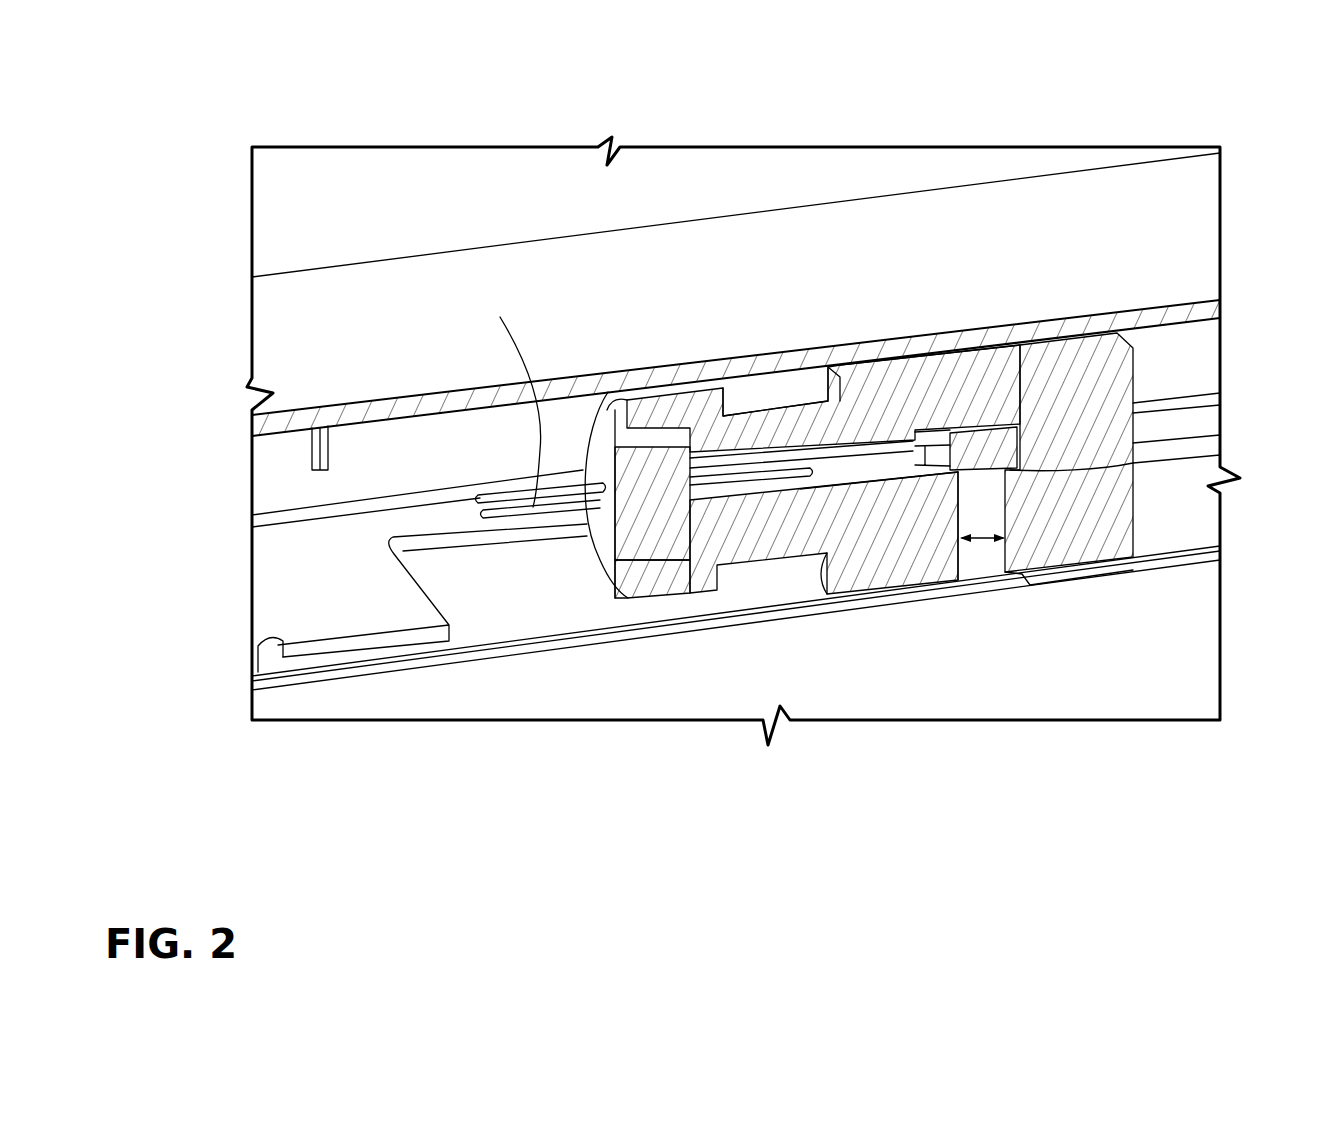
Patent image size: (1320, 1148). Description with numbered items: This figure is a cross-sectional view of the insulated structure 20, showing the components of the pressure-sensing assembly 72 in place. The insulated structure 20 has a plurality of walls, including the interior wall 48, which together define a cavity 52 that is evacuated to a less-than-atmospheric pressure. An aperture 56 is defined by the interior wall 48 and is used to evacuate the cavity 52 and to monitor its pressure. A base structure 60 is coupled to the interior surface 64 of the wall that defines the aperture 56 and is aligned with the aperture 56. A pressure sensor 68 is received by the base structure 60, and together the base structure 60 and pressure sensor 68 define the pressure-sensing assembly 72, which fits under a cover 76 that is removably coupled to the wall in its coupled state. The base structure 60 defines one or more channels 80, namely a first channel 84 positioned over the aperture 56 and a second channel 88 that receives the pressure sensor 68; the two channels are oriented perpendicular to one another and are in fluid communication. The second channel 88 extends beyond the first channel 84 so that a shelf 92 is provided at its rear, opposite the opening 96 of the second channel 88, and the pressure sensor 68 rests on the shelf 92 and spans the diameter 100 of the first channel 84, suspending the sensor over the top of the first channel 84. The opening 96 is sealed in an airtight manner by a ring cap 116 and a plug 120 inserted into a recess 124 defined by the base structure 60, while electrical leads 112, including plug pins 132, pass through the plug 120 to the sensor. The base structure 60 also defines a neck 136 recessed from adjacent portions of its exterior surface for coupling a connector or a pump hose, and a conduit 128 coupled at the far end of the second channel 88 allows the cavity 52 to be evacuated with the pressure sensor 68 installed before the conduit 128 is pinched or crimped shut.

The insulated structure 20 is at (1196, 104).
The interior wall 48 is at (1198, 520).
The cavity 52 is at (685, 688).
The aperture 56 is at (954, 514).
The base structure 60 is at (1142, 383).
The interior surface 64 is at (497, 598).
The pressure sensor 68 is at (1038, 390).
The pressure-sensing assembly 72 is at (891, 352).
The cover 76 is at (572, 277).
The channels 80 is at (880, 492).
The first channel 84 is at (1005, 572).
The second channel 88 is at (804, 436).
The shelf 92 is at (1133, 463).
The opening 96 is at (693, 500).
The diameter 100 is at (982, 540).
The electrical leads 112 is at (462, 510).
The ring cap 116 is at (662, 433).
The plug 120 is at (593, 417).
The recess 124 is at (648, 578).
The conduit 128 is at (992, 420).
The plug pins 132 is at (505, 503).
The neck 136 is at (747, 412).